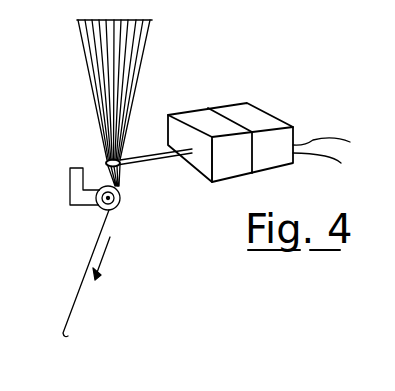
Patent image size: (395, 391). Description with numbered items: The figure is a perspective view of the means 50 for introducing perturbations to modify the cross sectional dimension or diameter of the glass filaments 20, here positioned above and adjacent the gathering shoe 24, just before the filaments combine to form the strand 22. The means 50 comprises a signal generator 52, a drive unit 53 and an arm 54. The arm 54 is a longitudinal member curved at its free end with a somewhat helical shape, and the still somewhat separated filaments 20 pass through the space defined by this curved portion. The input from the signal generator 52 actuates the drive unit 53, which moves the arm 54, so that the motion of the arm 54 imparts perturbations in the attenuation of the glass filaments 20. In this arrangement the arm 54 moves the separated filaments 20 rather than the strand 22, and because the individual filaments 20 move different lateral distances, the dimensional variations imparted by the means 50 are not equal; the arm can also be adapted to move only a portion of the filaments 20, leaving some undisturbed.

The glass filaments 20 is at (93, 47).
The strand 22 is at (79, 288).
The gathering shoe 24 is at (99, 208).
The means for introducing perturbations 50 is at (259, 130).
The signal generator 52 is at (272, 165).
The drive unit 53 is at (228, 174).
The arm 54 is at (140, 166).